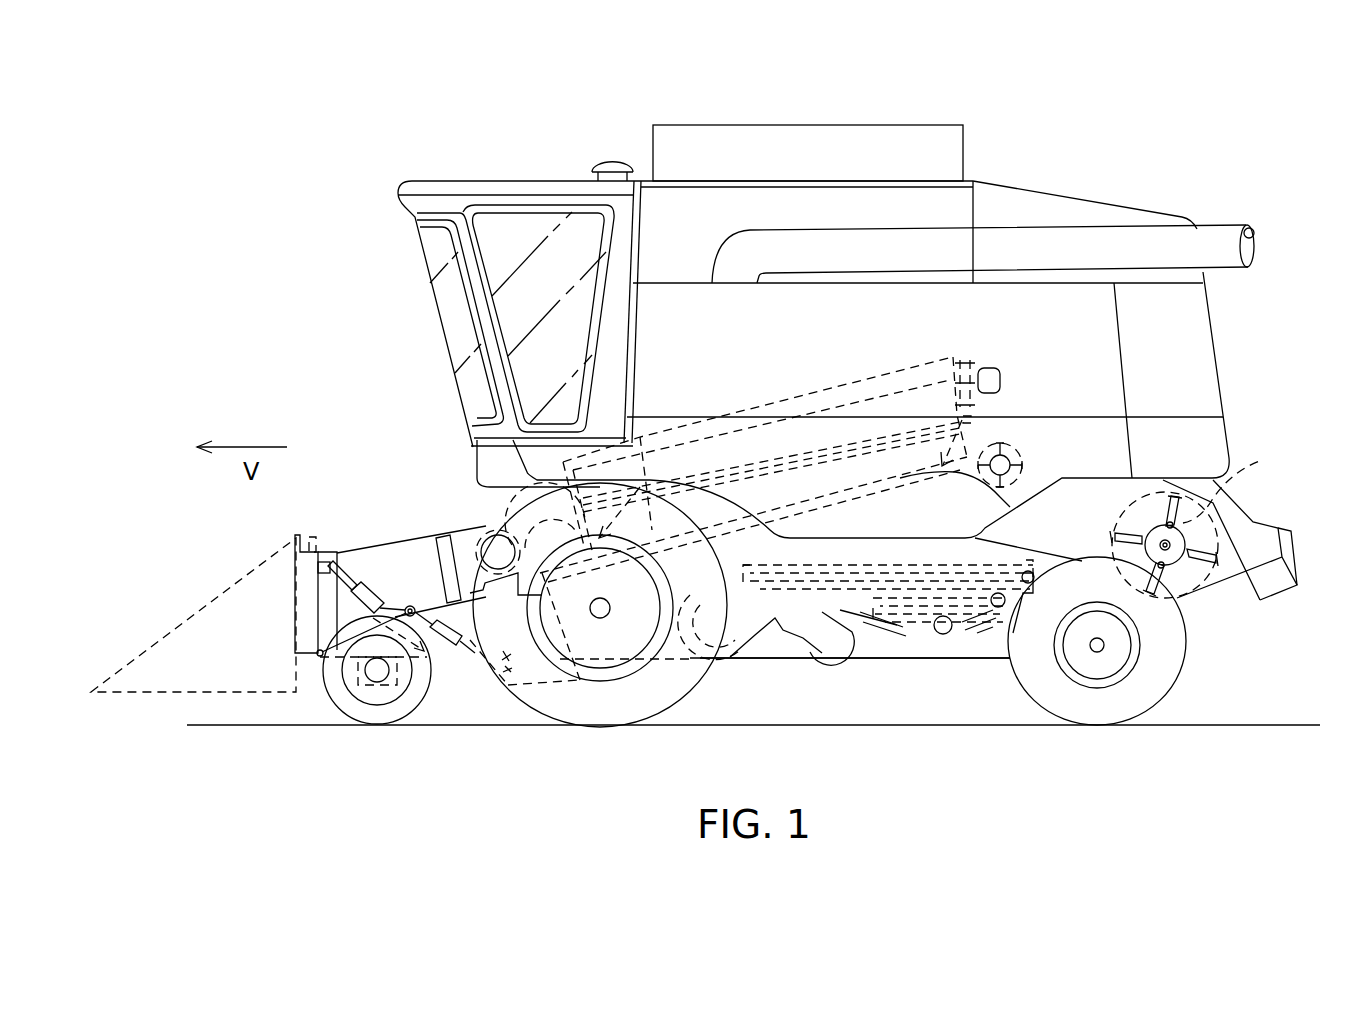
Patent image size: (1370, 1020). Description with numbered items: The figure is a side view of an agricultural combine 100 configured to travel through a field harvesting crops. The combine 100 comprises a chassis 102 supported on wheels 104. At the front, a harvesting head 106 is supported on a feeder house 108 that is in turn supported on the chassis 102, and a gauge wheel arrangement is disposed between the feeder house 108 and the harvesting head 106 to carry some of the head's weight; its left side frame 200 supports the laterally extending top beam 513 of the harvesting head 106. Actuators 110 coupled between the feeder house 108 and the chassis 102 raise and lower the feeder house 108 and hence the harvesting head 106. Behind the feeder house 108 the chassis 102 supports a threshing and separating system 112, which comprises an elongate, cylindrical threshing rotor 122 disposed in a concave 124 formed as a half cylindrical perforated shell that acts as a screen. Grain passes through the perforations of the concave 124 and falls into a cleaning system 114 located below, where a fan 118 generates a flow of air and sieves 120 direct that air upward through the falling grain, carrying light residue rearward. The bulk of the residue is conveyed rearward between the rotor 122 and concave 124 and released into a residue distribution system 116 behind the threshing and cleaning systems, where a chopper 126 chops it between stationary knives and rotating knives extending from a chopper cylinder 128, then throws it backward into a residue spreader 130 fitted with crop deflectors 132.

The agricultural combine 100 is at (462, 98).
The chassis 102 is at (913, 660).
The wheels 104 is at (520, 698).
The harvesting head 106 is at (197, 610).
The feeder house 108 is at (373, 558).
The actuators 110 is at (450, 640).
The threshing and separating system 112 is at (947, 333).
The cleaning system 114 is at (825, 660).
The residue distribution system 116 is at (1234, 606).
The fan 118 is at (707, 600).
The sieves 120 is at (923, 587).
The threshing rotor 122 is at (905, 368).
The concave 124 is at (963, 442).
The chopper 126 is at (1232, 503).
The chopper cylinder 128 is at (1232, 515).
The residue spreader 130 is at (1285, 517).
The crop deflectors 132 is at (1290, 578).
The left side frame 200 is at (307, 617).
The top beam 513 is at (312, 537).